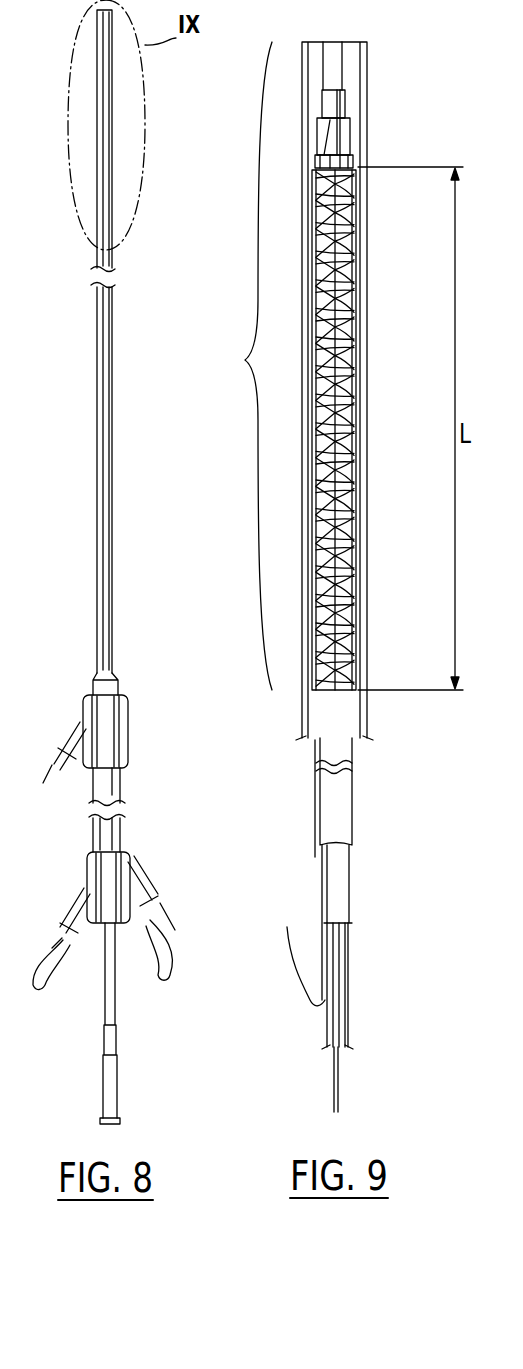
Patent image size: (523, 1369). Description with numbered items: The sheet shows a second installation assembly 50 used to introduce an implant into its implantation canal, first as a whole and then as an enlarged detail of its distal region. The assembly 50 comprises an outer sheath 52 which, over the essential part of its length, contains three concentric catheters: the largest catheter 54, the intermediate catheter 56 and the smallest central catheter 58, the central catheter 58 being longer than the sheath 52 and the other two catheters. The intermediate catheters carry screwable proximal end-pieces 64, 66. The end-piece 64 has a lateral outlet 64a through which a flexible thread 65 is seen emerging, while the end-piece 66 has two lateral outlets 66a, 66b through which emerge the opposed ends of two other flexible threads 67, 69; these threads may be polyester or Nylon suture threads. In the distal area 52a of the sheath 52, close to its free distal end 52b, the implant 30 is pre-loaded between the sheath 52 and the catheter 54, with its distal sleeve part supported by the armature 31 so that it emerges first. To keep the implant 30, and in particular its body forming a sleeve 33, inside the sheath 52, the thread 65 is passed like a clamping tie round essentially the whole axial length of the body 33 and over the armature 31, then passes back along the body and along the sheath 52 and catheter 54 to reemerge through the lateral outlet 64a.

In FIG. 9, the implant 30 is at (355, 387).
In FIG. 9, the armature 31 is at (318, 166).
In FIG. 9, the body forming a sleeve 33 is at (355, 583).
In FIG. 8, the second installation assembly 50 is at (130, 502).
In FIG. 9, the second installation assembly 50 is at (381, 526).
In FIG. 8, the outer sheath 52 is at (107, 152).
In FIG. 9, the outer sheath 52 is at (367, 280).
In FIG. 9, the distal area 52a is at (231, 366).
In FIG. 9, the free distal end 52b is at (367, 48).
In FIG. 9, the catheter 54 is at (320, 127).
In FIG. 9, the catheter 56 is at (350, 879).
In FIG. 8, the central catheter 58 is at (93, 1000).
In FIG. 9, the central catheter 58 is at (350, 969).
In FIG. 8, the proximal end-piece 64 is at (128, 745).
In FIG. 8, the lateral outlet 64a is at (84, 718).
In FIG. 8, the flexible thread 65 is at (50, 762).
In FIG. 9, the flexible thread 65 is at (350, 653).
In FIG. 8, the proximal end-piece 66 is at (125, 858).
In FIG. 8, the lateral outlet 66a is at (85, 895).
In FIG. 8, the lateral outlet 66b is at (148, 900).
In FIG. 8, the flexible thread 67 is at (50, 982).
In FIG. 9, the flexible thread 67 is at (345, 96).
In FIG. 8, the flexible thread 69 is at (159, 965).
In FIG. 9, the flexible thread 69 is at (380, 1080).